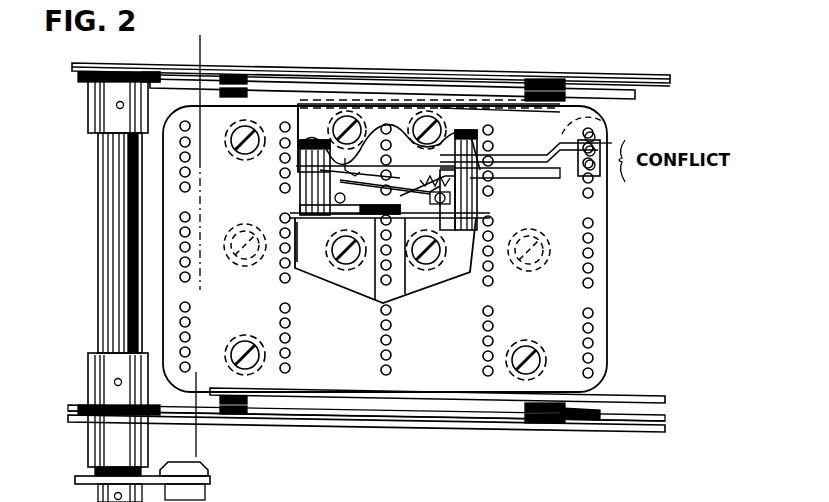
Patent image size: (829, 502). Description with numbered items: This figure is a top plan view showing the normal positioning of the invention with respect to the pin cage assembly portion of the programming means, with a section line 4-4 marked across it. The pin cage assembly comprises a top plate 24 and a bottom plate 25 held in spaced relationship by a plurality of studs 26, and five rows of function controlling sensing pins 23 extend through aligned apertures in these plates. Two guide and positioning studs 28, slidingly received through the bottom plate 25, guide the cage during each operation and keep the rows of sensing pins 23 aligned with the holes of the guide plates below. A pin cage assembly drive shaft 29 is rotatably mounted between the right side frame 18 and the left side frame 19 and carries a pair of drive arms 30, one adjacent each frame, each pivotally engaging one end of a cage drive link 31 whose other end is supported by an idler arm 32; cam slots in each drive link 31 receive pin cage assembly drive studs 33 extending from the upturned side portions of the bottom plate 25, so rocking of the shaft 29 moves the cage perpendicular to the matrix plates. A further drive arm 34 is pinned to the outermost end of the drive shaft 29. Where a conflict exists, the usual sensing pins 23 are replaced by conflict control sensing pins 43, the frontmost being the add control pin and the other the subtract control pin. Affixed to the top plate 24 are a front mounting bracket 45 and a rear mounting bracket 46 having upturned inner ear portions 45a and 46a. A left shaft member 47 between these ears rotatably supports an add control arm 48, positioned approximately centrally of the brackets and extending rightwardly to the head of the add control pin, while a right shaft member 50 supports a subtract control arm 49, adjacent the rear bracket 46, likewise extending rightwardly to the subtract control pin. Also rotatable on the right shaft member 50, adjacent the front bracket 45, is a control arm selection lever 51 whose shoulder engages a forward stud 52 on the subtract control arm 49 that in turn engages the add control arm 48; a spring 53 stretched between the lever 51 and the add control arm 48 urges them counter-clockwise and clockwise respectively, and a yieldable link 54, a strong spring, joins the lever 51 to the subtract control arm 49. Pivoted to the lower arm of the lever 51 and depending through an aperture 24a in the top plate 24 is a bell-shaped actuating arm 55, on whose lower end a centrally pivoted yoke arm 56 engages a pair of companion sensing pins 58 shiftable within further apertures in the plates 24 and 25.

The section line 4- 4 is at (232, 46).
The right side frame 18 is at (485, 422).
The left side frame 19 is at (283, 70).
The sensing pins 23 is at (180, 263).
The top plate 24 is at (586, 300).
The aperture 24a is at (394, 290).
The bottom plate 25 is at (437, 402).
The studs 26 is at (240, 164).
The guide and positioning studs 28 is at (236, 228).
The pin cage assembly drive shaft 29 is at (98, 160).
The drive arms 30 is at (84, 80).
The cage drive link 31 is at (278, 72).
The idler arm 32 is at (605, 82).
The pin cage assembly drive studs 33 is at (237, 76).
The further drive arm 34 is at (78, 478).
The conflict control sensing pins 43 is at (592, 114).
The front mounting bracket 45 is at (367, 283).
The upturned inner ear portion 45a is at (325, 218).
The rear mounting bracket 46 is at (384, 100).
The upturned inner ear portion 46a is at (468, 112).
The left shaft member 47 is at (308, 168).
The add control arm 48 is at (334, 165).
The subtract control arm 49 is at (545, 158).
The right shaft member 50 is at (470, 130).
The control arm selection lever 51 is at (444, 205).
The forward stud 52 is at (395, 170).
The spring 53 is at (345, 165).
The yieldable link 54 is at (452, 168).
The actuating arm 55 is at (372, 300).
The yoke arm 56 is at (300, 182).
The companion sensing pins 58 is at (300, 205).